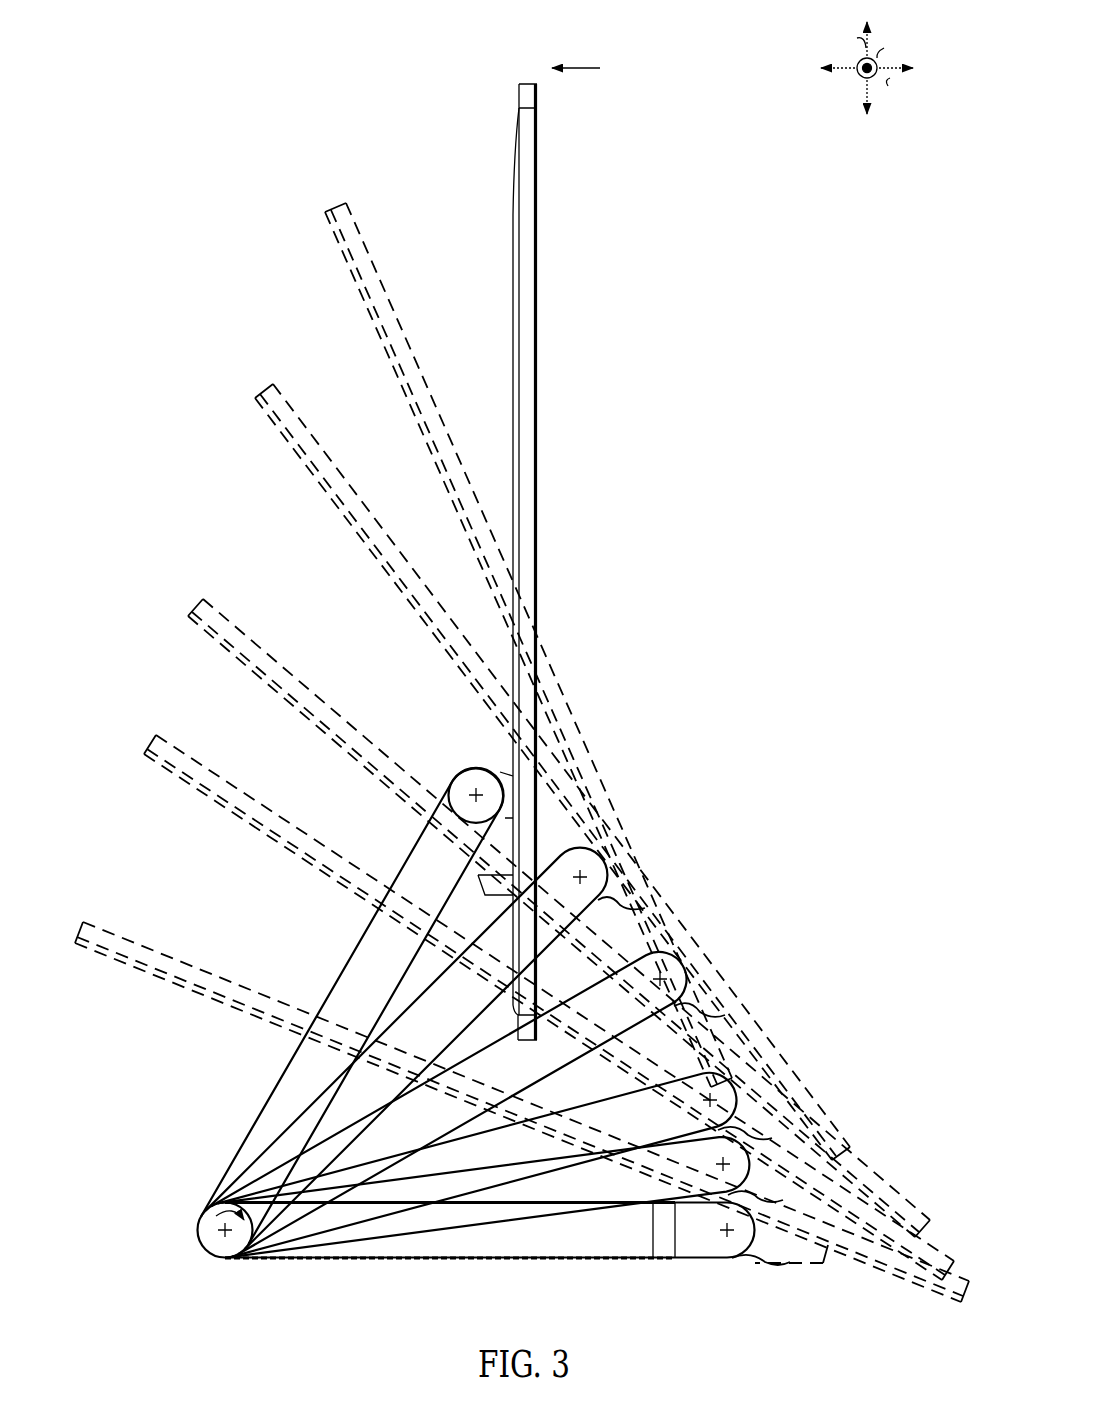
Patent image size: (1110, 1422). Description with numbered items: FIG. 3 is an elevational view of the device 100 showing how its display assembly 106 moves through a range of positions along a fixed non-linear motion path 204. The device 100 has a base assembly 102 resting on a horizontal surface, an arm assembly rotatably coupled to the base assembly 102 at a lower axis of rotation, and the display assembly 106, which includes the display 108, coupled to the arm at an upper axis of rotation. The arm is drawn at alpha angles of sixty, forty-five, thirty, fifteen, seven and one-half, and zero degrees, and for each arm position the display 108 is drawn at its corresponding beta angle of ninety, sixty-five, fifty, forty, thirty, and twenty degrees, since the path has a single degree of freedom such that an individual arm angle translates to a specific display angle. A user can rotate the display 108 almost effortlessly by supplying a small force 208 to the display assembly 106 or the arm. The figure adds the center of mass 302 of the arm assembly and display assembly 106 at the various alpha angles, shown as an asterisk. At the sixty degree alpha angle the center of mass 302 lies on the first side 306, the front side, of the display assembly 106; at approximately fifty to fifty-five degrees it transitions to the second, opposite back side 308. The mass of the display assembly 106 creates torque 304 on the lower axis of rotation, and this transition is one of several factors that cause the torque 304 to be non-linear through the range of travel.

The device 100 is at (234, 40).
The small force 208 is at (597, 68).
The second side 308 is at (134, 249).
The first side 306 is at (907, 249).
The display assembly 106 is at (546, 382).
The display 108 is at (540, 442).
The center of mass 302 is at (557, 750).
The fixed non-linear motion path 204 is at (666, 811).
The torque 304 is at (216, 1220).
The base assembly 102 is at (512, 1264).